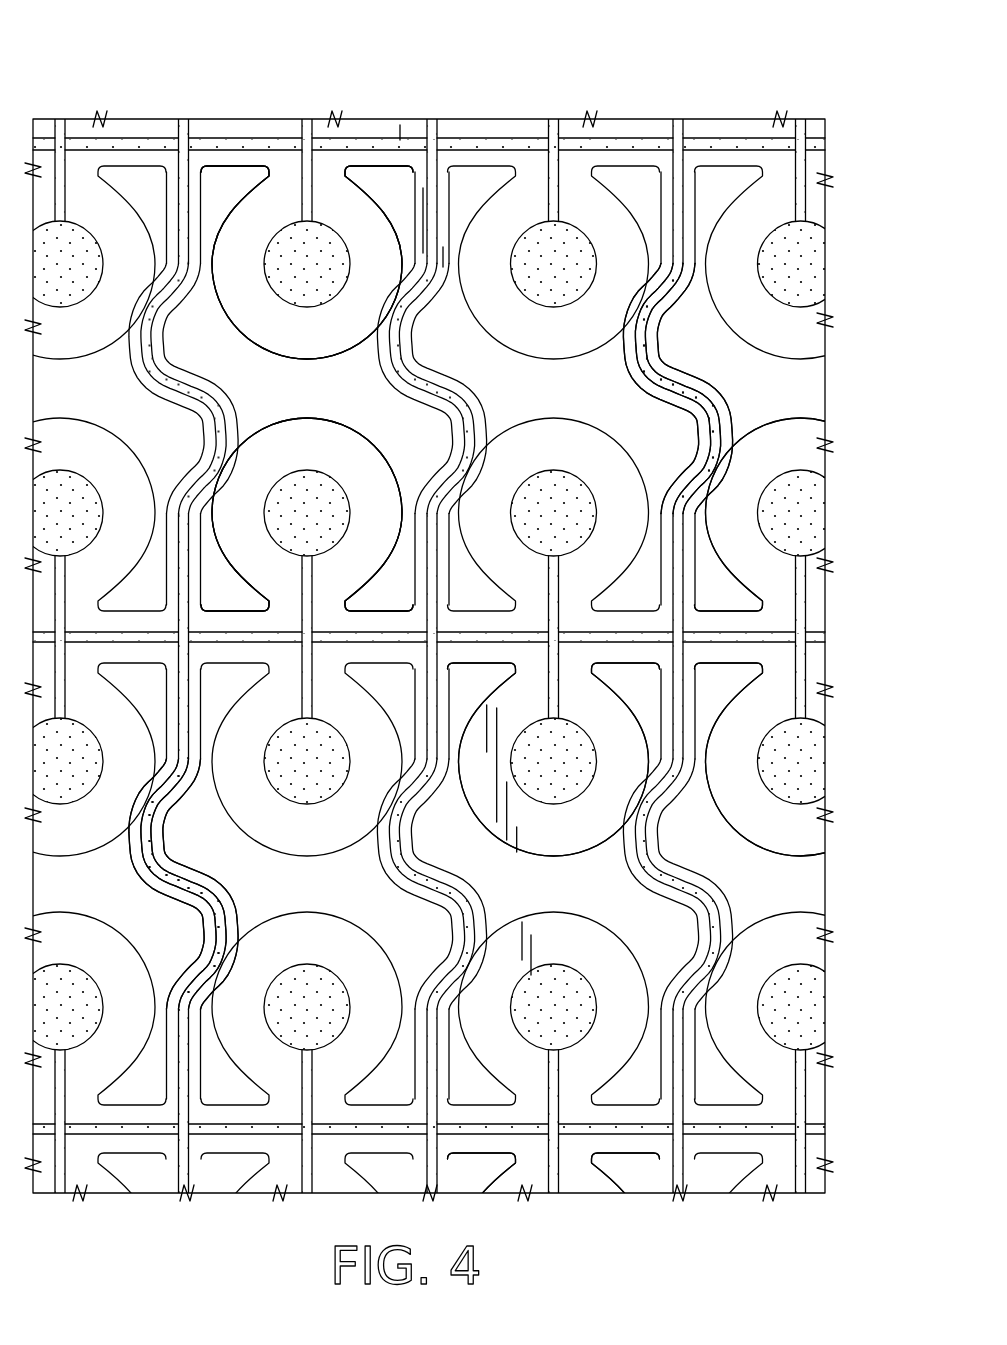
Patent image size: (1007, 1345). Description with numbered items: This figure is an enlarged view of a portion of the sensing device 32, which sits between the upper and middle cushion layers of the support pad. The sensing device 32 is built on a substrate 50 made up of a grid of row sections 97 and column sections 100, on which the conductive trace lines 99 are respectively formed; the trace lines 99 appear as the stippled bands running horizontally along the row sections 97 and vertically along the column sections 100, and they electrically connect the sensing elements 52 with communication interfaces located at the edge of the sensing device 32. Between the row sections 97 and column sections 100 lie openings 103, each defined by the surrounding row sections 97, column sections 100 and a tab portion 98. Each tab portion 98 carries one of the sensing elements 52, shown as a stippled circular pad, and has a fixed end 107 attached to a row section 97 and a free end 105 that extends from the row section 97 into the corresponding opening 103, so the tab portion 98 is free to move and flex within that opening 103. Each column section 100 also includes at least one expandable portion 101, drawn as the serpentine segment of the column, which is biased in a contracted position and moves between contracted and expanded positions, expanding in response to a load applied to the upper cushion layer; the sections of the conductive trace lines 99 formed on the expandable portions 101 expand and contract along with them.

The sensing device 32 is at (108, 80).
The substrate 50 is at (722, 118).
The sensing element 52 is at (555, 305).
The row section 97 is at (725, 603).
The tab portion 98 is at (498, 325).
The conductive trace line 99 is at (278, 632).
The column section 100 is at (198, 205).
The expandable portion 101 is at (722, 412).
The opening 103 is at (346, 350).
The free end 105 is at (296, 416).
The fixed end 107 is at (332, 603).